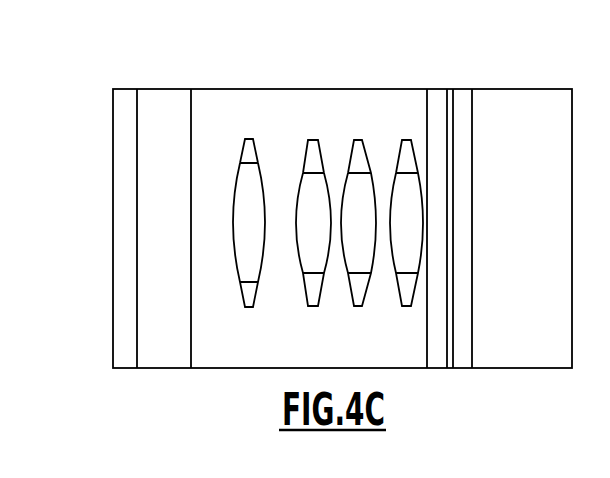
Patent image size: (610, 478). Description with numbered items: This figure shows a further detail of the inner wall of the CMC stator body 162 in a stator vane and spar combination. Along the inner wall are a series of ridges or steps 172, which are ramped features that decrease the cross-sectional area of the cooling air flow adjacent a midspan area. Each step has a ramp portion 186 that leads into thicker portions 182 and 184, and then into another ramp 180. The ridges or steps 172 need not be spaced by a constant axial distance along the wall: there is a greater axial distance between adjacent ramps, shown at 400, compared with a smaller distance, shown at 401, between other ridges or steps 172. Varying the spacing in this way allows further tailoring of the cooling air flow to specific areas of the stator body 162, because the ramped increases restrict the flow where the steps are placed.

The CMC stator body 162 is at (299, 54).
The ridges or steps 172 is at (215, 117).
The ramp portion 186 is at (250, 157).
The thicker portion 184 is at (242, 210).
The thicker portion 182 is at (248, 251).
The ramp 180 is at (250, 293).
The greater axial distance 400 is at (280, 210).
The smaller axial distance 401 is at (332, 178).